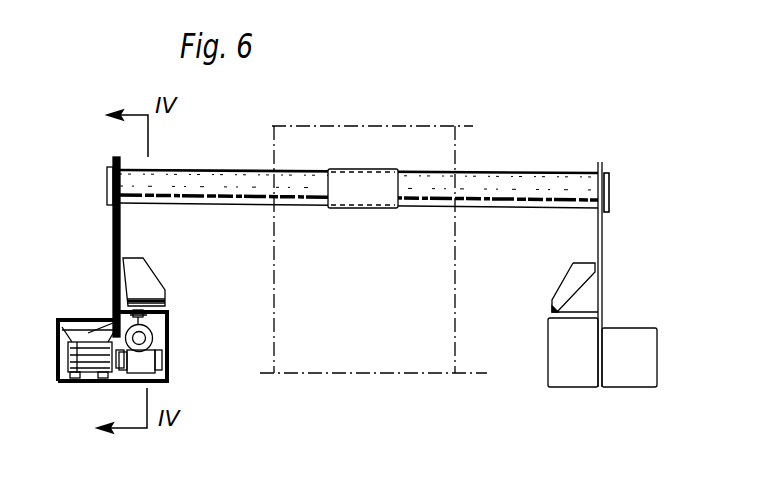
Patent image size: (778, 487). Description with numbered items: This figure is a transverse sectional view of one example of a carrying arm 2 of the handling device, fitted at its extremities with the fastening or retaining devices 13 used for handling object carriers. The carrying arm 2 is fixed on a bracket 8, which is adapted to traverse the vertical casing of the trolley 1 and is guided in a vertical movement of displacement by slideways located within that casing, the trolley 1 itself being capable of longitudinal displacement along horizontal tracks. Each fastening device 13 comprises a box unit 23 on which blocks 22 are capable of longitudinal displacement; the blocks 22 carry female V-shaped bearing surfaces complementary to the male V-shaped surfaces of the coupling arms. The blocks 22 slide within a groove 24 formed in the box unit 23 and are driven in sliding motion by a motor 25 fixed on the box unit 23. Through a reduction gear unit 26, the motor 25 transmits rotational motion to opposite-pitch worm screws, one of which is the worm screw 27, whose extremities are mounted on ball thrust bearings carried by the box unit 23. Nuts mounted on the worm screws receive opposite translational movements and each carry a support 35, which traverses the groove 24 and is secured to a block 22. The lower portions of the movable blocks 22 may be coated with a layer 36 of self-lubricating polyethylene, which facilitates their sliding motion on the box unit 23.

The trolley 1 is at (437, 263).
The carrying arm 2 is at (526, 190).
The bracket 8 is at (362, 180).
The fastening or retaining device 13 is at (113, 227).
The block 22 is at (135, 293).
The box unit 23 is at (168, 343).
The groove 24 is at (152, 315).
The motor 25 is at (73, 337).
The reduction gear unit 26 is at (140, 368).
The worm screw 27 is at (145, 340).
The support 35 is at (118, 313).
The layer of self-lubricating polyethylene 36 is at (158, 296).